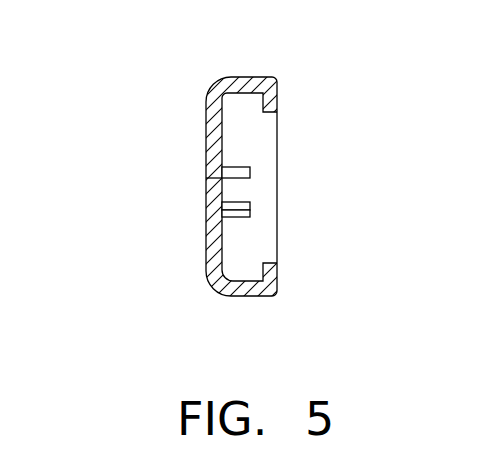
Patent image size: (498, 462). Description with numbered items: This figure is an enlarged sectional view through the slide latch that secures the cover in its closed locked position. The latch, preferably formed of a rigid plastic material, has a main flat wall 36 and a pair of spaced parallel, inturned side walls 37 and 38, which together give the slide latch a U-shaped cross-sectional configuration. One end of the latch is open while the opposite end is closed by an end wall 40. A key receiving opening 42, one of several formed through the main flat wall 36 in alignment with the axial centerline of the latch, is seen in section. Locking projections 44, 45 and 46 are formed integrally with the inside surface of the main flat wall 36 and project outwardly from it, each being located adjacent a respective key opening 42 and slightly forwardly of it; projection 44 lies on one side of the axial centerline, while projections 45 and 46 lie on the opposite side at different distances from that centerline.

The main flat wall 36 is at (206, 230).
The inturned side wall 37 is at (245, 77).
The inturned side wall 38 is at (253, 296).
The end wall 40 is at (258, 242).
The key receiving opening 42 is at (208, 191).
The locking projection 44 is at (238, 160).
The locking projection 45 is at (238, 199).
The locking projection 46 is at (250, 212).